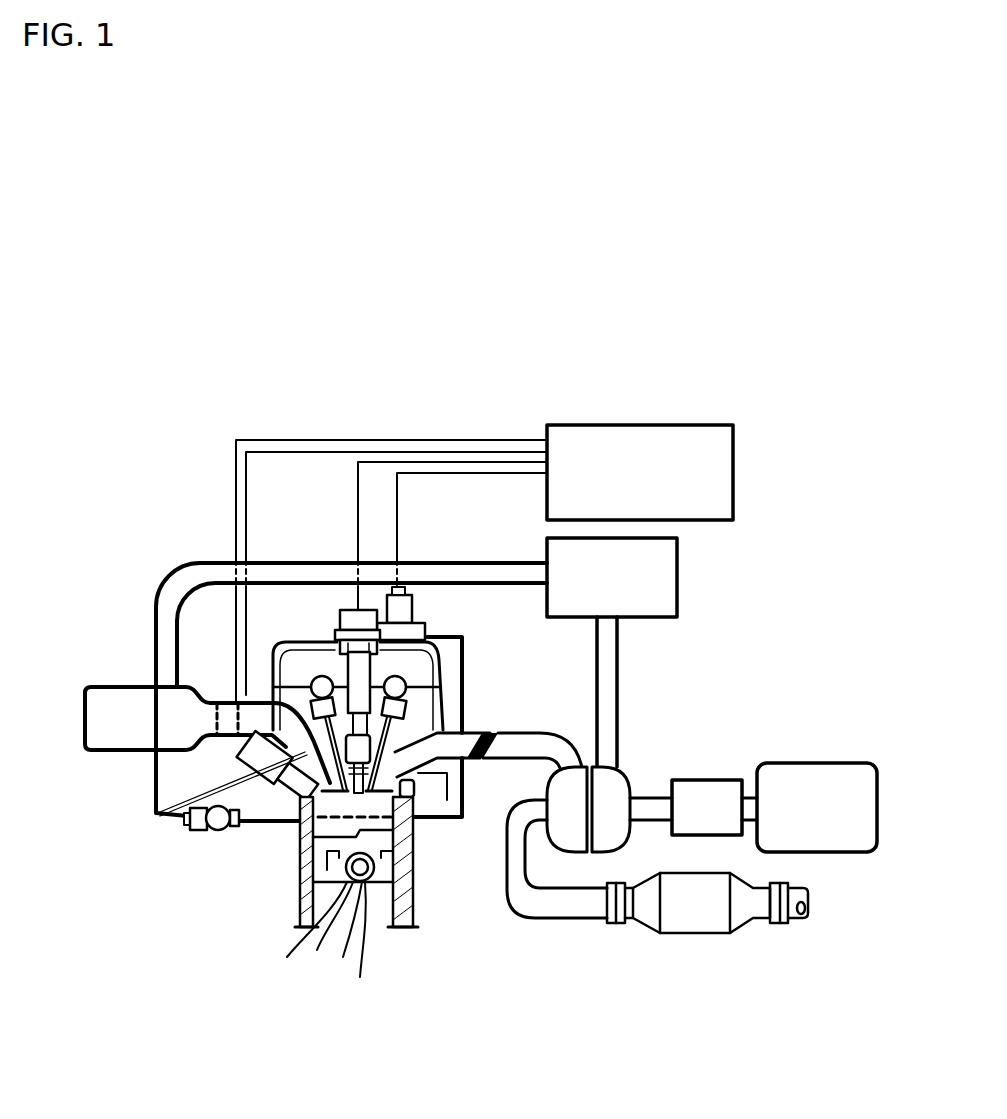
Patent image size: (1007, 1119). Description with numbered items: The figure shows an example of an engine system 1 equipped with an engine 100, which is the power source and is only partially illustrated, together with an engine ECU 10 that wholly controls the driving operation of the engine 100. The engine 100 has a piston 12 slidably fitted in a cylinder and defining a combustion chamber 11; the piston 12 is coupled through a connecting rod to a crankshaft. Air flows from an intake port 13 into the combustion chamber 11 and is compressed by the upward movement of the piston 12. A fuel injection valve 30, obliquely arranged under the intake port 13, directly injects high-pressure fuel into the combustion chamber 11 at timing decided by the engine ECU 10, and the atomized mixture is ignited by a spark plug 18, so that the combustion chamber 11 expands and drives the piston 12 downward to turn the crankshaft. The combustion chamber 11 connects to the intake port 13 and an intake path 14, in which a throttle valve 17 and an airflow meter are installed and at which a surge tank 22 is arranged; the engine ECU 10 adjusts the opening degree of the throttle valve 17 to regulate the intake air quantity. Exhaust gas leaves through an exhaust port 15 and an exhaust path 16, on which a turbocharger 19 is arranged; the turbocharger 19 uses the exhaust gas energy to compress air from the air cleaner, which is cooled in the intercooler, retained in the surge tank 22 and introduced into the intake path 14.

The engine system 1 is at (179, 384).
The engine ECU 10 is at (735, 423).
The combustion chamber 11 is at (343, 800).
The piston 12 is at (327, 870).
The intake port 13 is at (258, 788).
The intake path 14 is at (212, 703).
The exhaust port 15 is at (415, 752).
The exhaust path 16 is at (527, 735).
The throttle valve 17 is at (252, 700).
The spark plug 18 is at (360, 797).
The turbocharger 19 is at (634, 779).
The surge tank 22 is at (130, 687).
The fuel injection valve 30 is at (237, 758).
The engine 100 is at (456, 909).